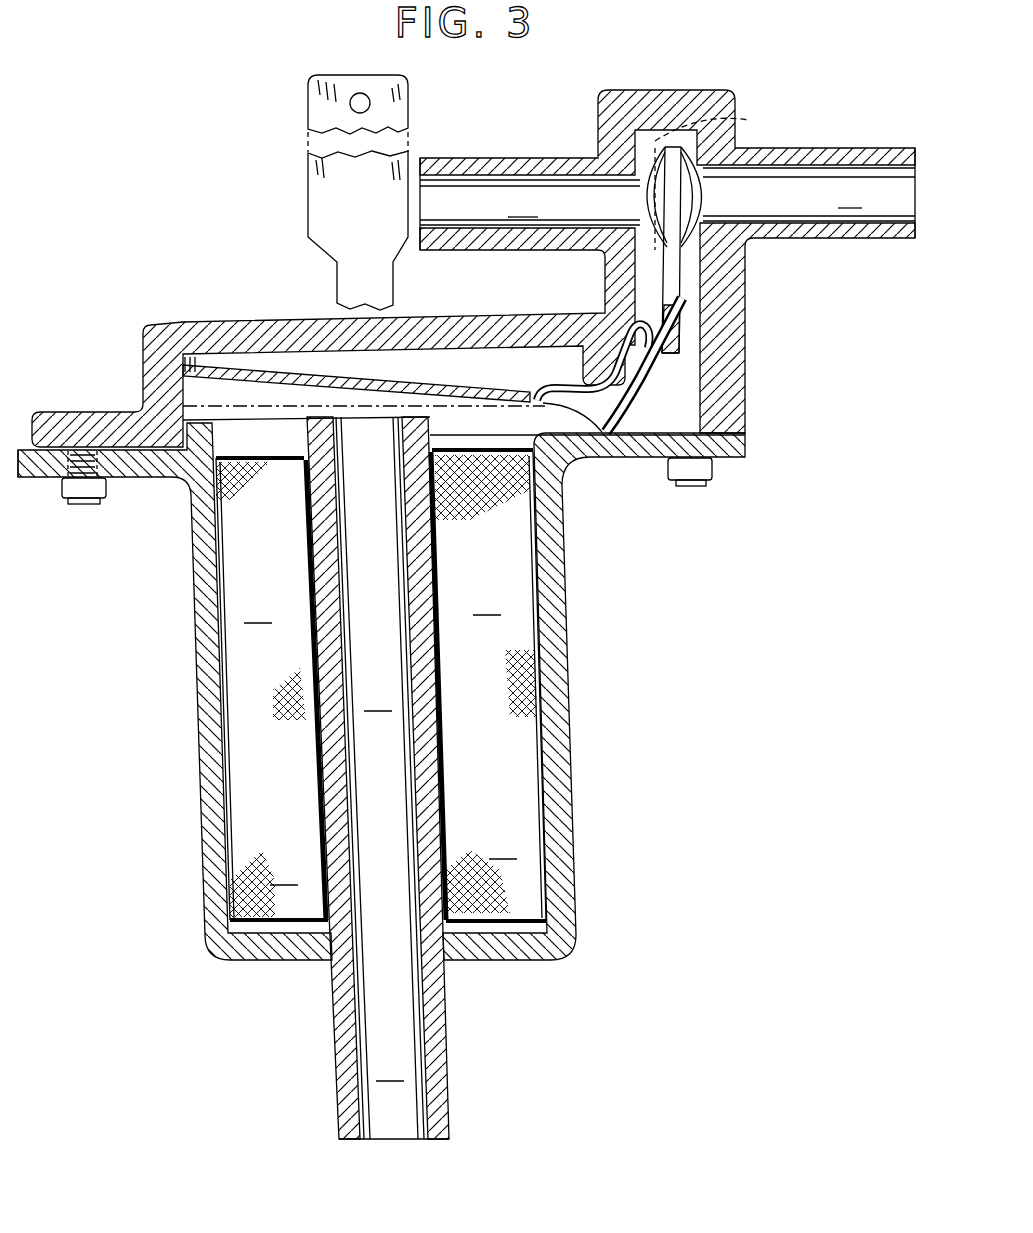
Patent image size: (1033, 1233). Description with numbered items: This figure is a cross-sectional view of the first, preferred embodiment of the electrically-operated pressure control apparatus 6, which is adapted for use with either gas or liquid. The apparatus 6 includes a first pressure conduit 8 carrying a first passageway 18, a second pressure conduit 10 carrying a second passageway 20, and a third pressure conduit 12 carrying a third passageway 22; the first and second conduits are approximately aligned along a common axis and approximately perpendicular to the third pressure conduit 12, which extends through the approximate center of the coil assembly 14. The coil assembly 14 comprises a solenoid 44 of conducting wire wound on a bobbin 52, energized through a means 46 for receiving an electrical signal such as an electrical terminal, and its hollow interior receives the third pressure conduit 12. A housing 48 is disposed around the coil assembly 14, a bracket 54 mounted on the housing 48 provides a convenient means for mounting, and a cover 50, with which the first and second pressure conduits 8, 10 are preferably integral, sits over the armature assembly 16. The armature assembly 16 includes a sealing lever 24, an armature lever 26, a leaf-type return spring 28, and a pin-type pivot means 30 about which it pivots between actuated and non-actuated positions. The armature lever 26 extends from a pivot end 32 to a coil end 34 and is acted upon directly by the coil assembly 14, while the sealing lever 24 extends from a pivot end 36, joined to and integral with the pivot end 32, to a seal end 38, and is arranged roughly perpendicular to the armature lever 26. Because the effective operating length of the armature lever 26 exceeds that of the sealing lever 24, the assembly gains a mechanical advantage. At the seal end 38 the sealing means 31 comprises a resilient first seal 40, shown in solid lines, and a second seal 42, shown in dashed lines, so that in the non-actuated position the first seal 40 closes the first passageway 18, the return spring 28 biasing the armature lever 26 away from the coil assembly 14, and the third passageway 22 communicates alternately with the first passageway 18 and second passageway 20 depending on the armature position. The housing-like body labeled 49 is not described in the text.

The electrically-operated pressure control apparatus 6 is at (692, 787).
The first pressure conduit 8 is at (826, 148).
The second pressure conduit 10 is at (497, 157).
The third pressure conduit 12 is at (322, 513).
The coil assembly 14 is at (160, 813).
The armature assembly 16 is at (522, 300).
The first passageway 18 is at (850, 196).
The second passageway 20 is at (523, 205).
The third passageway 22 is at (392, 778).
The sealing lever 24 is at (672, 266).
The armature lever 26 is at (273, 404).
The return spring 28 is at (640, 352).
The pivot means 30 is at (606, 468).
The sealing means 31 is at (652, 70).
The pivot end of armature lever 32 is at (562, 406).
The coil end of armature lever 34 is at (193, 363).
The pivot end of sealing lever 36 is at (648, 368).
The seal end of sealing lever 38 is at (712, 123).
The first seal 40 is at (697, 201).
The second seal 42 is at (655, 199).
The solenoid 44 is at (376, 686).
The means for receiving an electrical signal 46 is at (320, 210).
The housing 48 is at (190, 702).
The housing body 49 is at (748, 397).
The cover 50 is at (447, 313).
The bobbin 52 is at (306, 765).
The bracket 54 is at (50, 470).